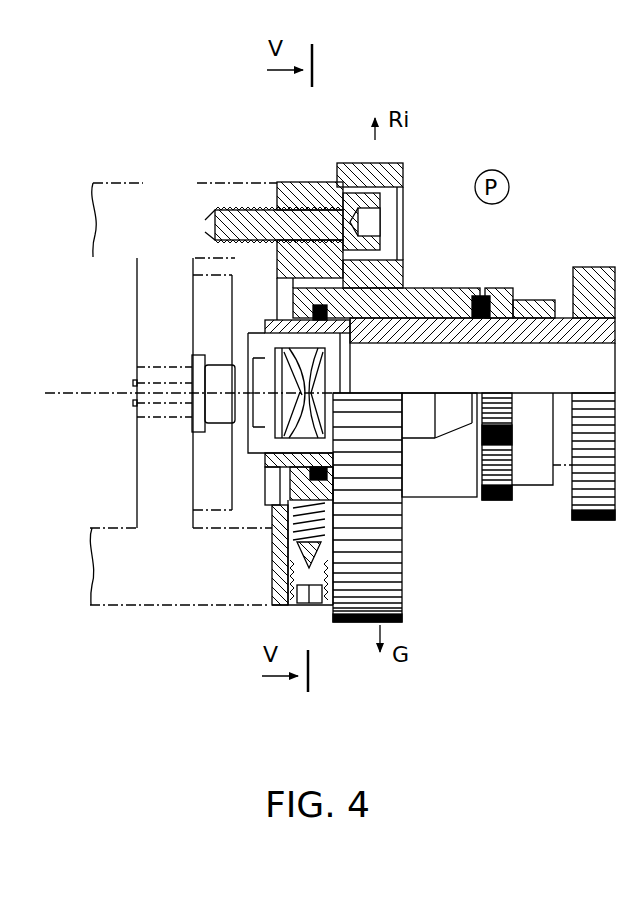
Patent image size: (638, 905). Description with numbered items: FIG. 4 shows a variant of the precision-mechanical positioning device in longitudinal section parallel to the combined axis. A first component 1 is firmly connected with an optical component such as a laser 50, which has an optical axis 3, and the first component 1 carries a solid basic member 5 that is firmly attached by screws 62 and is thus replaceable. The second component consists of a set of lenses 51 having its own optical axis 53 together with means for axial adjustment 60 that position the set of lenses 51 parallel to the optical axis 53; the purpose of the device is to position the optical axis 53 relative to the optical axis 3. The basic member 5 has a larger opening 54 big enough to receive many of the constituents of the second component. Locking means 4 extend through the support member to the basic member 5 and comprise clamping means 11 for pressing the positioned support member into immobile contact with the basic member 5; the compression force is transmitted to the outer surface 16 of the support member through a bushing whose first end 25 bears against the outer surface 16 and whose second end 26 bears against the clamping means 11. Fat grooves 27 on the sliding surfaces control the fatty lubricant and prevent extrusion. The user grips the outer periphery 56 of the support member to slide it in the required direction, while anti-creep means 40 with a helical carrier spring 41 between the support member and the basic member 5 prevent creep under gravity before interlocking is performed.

The first component 1 is at (125, 587).
The optical axis 3 is at (112, 393).
The locking means 4 is at (452, 455).
The basic member 5 is at (320, 183).
The clamping means 11 is at (512, 425).
The outer surface 16 is at (403, 548).
The first end 25 is at (410, 425).
The second end 26 is at (467, 405).
The fat grooves 27 is at (393, 166).
The anti-creep means 40 is at (241, 549).
The carrier spring 41 is at (273, 537).
The laser 50 is at (222, 435).
The set of lenses 51 is at (325, 372).
The optical axis 53 is at (292, 365).
The opening 54 is at (287, 285).
The outer periphery 56 is at (345, 622).
The means for axial adjustment 60 is at (517, 316).
The screws 62 is at (247, 210).